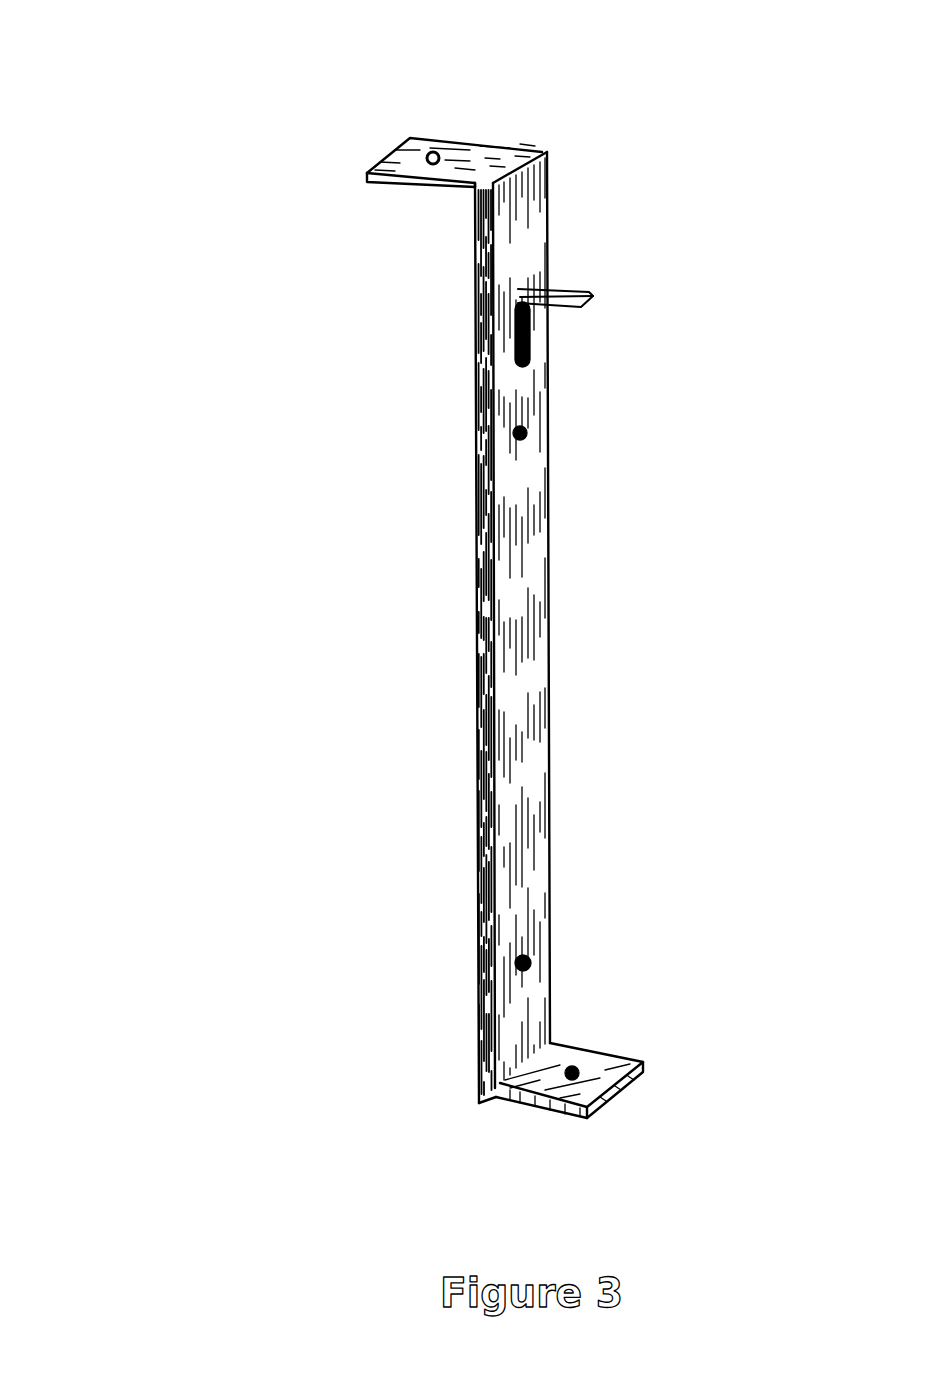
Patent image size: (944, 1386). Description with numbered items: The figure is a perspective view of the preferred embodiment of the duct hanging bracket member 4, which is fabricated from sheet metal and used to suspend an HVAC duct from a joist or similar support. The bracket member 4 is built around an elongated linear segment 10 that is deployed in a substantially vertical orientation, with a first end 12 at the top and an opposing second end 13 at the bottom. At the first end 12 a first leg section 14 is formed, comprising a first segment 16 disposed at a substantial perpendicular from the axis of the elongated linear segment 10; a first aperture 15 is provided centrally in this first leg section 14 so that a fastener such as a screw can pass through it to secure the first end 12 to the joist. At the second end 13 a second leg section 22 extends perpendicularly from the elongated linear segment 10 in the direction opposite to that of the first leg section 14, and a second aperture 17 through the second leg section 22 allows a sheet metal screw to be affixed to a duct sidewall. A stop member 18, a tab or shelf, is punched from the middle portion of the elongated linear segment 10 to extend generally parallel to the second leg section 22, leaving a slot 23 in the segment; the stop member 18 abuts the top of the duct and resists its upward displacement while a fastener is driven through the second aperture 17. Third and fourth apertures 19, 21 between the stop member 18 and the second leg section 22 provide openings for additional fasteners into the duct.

The duct hanging bracket member 4 is at (220, 598).
The elongated linear segment 10 is at (532, 677).
The first end 12 is at (528, 205).
The second end 13 is at (530, 1028).
The first leg section 14 is at (475, 157).
The first aperture 15 is at (433, 165).
The first segment 16 is at (453, 192).
The second aperture 17 is at (600, 1068).
The stop member 18 is at (572, 287).
The third aperture 19 is at (527, 432).
The fourth aperture 21 is at (528, 960).
The second leg section 22 is at (552, 1080).
The slot 23 is at (530, 342).